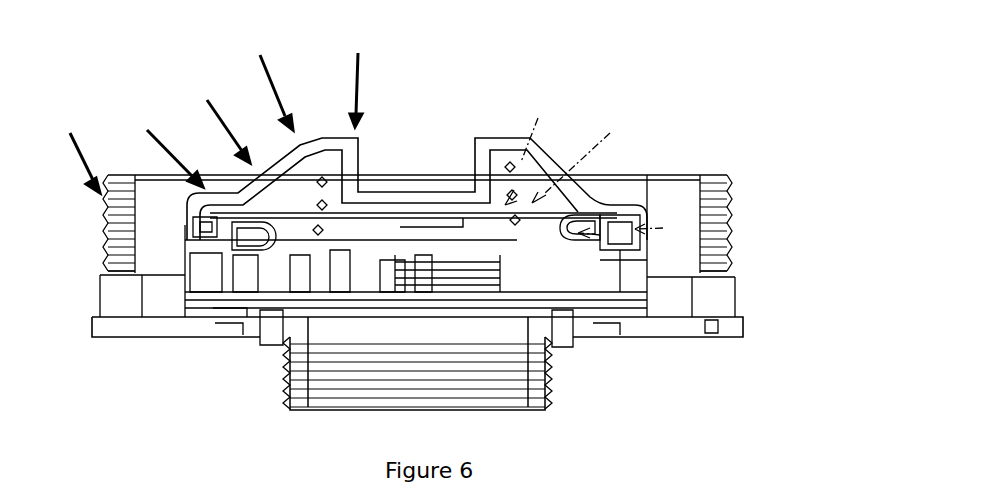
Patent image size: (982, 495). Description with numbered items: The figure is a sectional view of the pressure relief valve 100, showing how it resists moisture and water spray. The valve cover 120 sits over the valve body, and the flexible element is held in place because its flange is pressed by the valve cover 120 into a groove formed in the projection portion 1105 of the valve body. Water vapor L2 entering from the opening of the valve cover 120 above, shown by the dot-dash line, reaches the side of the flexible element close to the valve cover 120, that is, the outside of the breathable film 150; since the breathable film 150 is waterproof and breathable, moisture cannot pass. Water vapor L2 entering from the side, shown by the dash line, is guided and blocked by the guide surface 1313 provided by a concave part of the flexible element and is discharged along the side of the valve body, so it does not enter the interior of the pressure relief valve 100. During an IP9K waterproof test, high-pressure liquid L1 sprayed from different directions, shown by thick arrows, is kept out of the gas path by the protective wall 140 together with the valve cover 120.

The pressure relief valve 100 is at (622, 100).
The projection portion 1105 is at (200, 220).
The valve cover 120 is at (358, 165).
The breathable film 150 is at (603, 202).
The guide surface 1313 is at (637, 233).
The protective wall 140 is at (733, 262).
The high-pressure liquid L1 is at (216, 122).
The water vapor L2 is at (593, 173).